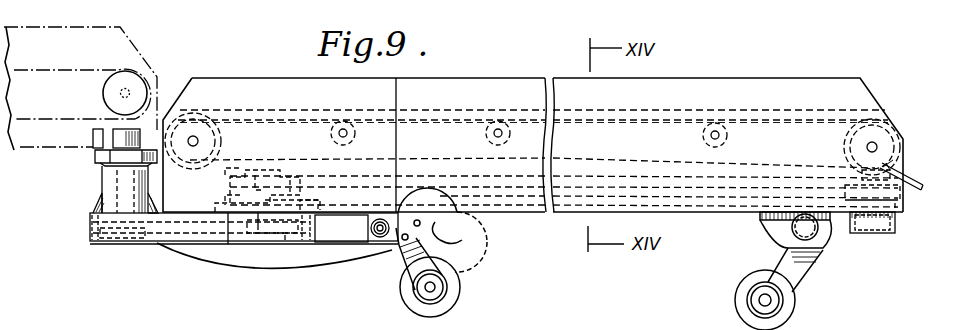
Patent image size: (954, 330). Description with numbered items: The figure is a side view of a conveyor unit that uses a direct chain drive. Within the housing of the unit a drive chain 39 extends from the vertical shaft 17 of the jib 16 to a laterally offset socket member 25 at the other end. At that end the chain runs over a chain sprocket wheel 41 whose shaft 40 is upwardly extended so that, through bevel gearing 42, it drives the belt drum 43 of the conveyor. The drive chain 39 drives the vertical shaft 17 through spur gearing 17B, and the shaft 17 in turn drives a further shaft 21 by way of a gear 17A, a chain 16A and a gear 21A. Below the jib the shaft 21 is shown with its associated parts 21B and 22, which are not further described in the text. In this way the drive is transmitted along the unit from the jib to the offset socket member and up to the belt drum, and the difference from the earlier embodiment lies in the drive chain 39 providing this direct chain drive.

The jib 16 is at (141, 242).
The chain 16A is at (204, 243).
The vertical shaft 17 is at (236, 200).
The gear 17A is at (284, 246).
The spur gearing 17B is at (296, 196).
The shaft 21 is at (117, 172).
The gear 21A is at (104, 241).
The clamp block 21B is at (95, 144).
The support post 22 is at (110, 190).
The socket member 25 is at (866, 234).
The drive chain 39 is at (512, 204).
The shaft 40 is at (910, 183).
The chain sprocket wheel 41 is at (905, 208).
The bevel gearing 42 is at (895, 140).
The belt drum 43 is at (852, 141).